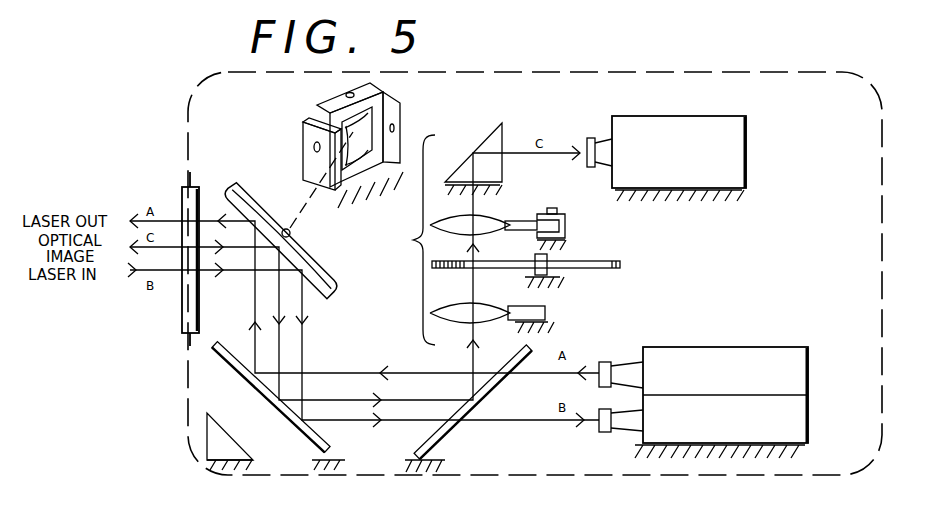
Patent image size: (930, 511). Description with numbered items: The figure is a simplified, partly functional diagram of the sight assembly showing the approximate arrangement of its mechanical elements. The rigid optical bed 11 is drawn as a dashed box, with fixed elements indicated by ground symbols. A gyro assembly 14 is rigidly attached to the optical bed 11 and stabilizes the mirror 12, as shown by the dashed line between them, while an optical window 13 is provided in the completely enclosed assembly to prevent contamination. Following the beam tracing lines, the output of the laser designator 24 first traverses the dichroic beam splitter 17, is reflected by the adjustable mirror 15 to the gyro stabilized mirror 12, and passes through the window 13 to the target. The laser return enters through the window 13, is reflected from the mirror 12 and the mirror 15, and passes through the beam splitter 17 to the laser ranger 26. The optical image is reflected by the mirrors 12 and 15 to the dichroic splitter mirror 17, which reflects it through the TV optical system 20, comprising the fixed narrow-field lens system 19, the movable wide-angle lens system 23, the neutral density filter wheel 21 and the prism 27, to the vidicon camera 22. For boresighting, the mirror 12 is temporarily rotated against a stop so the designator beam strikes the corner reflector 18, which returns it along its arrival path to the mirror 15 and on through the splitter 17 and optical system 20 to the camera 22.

The optical bed 11 is at (692, 473).
The gyro stabilized mirror 12 is at (326, 280).
The optical window 13 is at (182, 318).
The gyro assembly 14 is at (303, 134).
The adjustable mirror 15 is at (292, 426).
The dichroic beam splitter 17 is at (458, 426).
The corner reflector 18 is at (211, 413).
The fixed lens system 19 is at (506, 306).
The TV optical system 20 is at (409, 240).
The optical filter system 21 is at (586, 261).
The vidicon camera 22 is at (748, 146).
The movable lens system 23 is at (512, 215).
The laser designator 24 is at (787, 347).
The laser ranger 26 is at (728, 386).
The prism 27 is at (484, 142).